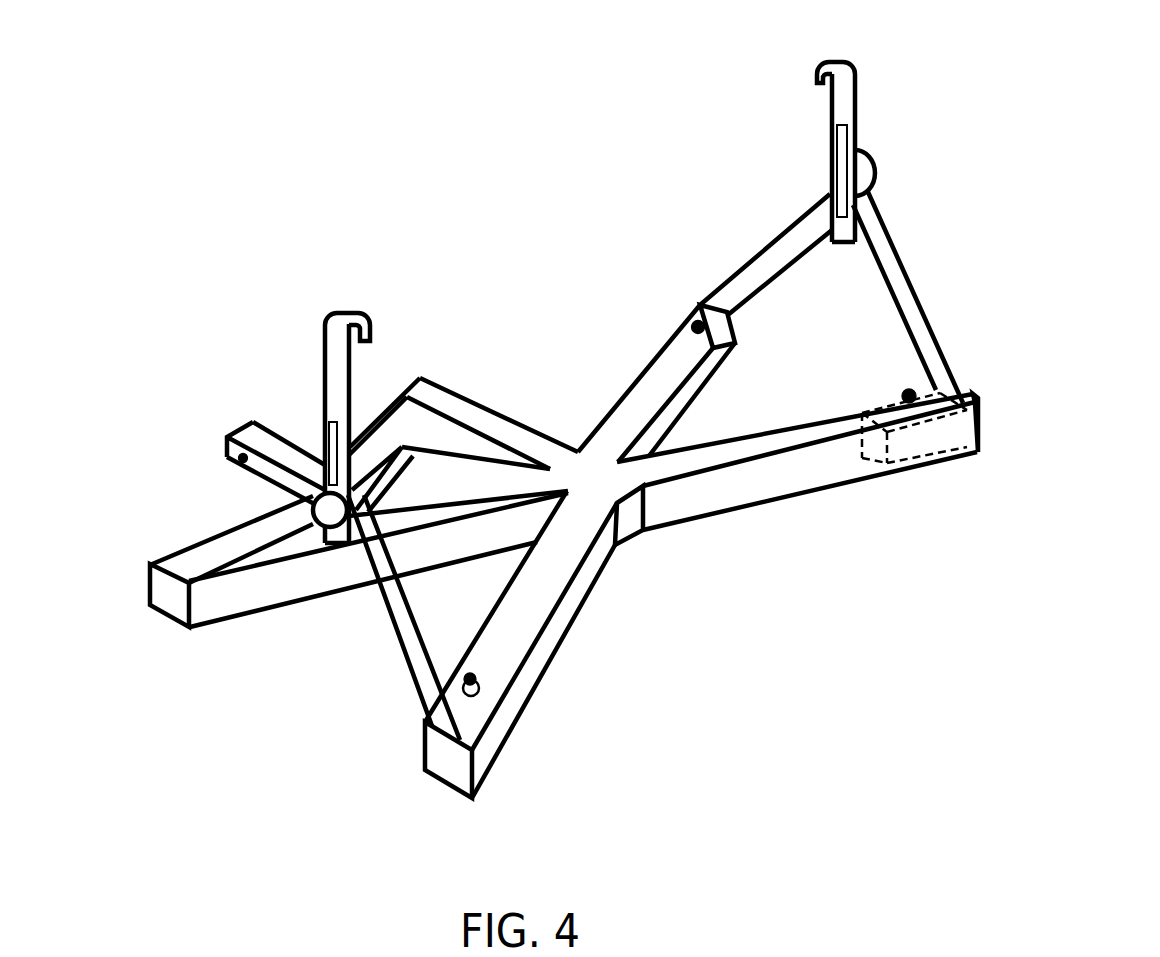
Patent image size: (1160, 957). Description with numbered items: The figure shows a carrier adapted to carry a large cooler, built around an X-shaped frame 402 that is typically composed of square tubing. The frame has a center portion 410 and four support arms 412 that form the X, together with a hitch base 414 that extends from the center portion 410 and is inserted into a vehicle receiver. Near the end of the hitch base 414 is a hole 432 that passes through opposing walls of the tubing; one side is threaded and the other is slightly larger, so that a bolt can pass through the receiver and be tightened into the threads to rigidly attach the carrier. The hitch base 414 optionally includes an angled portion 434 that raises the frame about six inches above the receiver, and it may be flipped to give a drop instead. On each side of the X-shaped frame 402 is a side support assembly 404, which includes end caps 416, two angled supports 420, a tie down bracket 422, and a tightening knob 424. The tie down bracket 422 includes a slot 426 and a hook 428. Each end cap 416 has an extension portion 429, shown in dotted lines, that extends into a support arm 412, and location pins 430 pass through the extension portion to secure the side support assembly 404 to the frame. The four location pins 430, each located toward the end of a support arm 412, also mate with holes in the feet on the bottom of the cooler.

The X-shaped frame 402 is at (628, 542).
The side support assembly 404 is at (912, 88).
The center portion 410 is at (528, 418).
The support arms 412 is at (232, 628).
The hitch base 414 is at (227, 447).
The end caps 416 is at (168, 622).
The angled support 420 is at (247, 524).
The tie down bracket 422 is at (322, 370).
The tightening knob 424 is at (326, 522).
The slot 426 is at (330, 435).
The hook 428 is at (367, 320).
The extension portion 429 is at (888, 450).
The location pins 430 is at (697, 320).
The hole 432 is at (241, 461).
The angled portion 434 is at (376, 408).